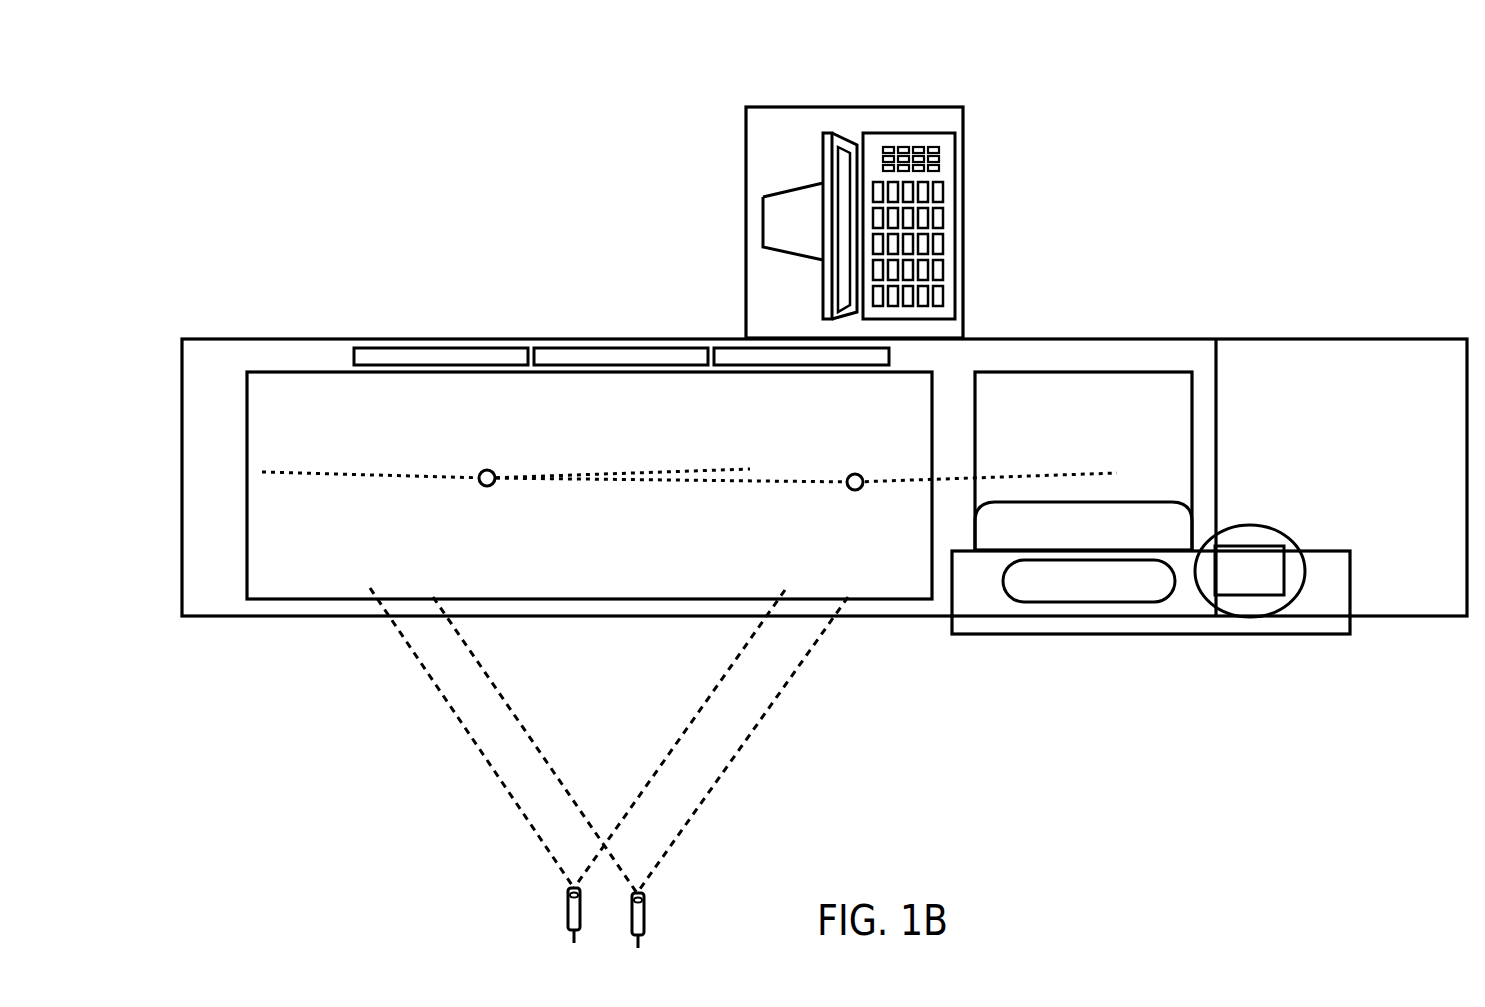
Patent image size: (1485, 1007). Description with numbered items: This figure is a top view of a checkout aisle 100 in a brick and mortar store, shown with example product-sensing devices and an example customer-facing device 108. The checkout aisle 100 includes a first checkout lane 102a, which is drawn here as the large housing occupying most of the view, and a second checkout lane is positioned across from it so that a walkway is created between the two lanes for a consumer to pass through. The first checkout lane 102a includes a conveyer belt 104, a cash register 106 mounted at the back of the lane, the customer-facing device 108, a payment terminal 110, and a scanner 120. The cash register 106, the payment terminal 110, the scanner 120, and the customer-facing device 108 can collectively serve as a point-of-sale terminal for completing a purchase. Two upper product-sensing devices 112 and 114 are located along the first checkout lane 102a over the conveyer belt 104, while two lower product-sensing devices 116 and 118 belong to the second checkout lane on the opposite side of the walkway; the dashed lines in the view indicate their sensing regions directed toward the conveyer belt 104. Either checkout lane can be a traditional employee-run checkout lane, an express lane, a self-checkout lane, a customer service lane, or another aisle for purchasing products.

The checkout aisle 100 is at (305, 72).
The first checkout lane 102a is at (182, 481).
The conveyer belt 104 is at (589, 485).
The cash register 106 is at (1020, 156).
The customer-facing device 108 is at (1151, 592).
The payment terminal 110 is at (1250, 526).
The upper product-sensing device 112 is at (491, 470).
The upper product-sensing device 114 is at (858, 474).
The lower product-sensing device 116 is at (568, 908).
The lower product-sensing device 118 is at (644, 913).
The scanner 120 is at (1083, 461).